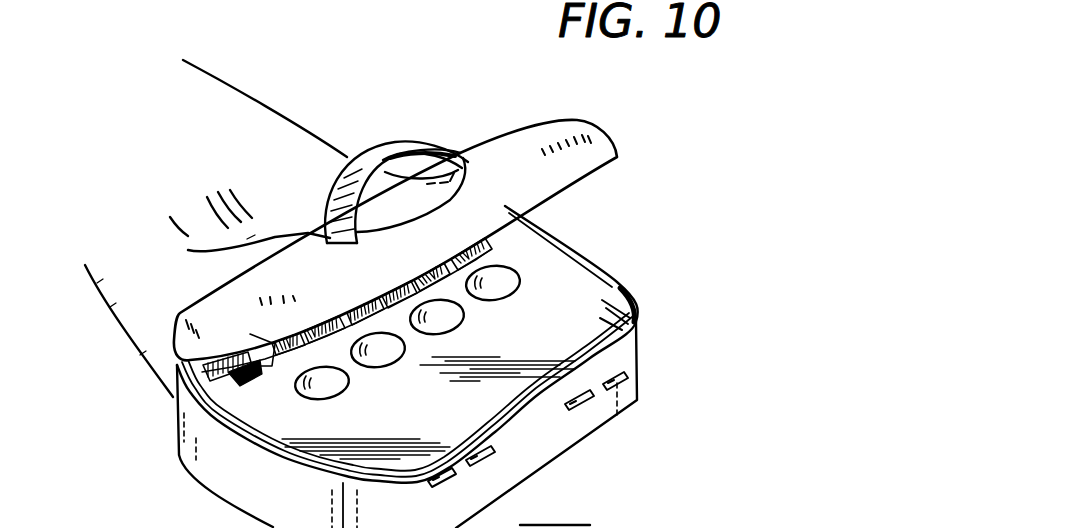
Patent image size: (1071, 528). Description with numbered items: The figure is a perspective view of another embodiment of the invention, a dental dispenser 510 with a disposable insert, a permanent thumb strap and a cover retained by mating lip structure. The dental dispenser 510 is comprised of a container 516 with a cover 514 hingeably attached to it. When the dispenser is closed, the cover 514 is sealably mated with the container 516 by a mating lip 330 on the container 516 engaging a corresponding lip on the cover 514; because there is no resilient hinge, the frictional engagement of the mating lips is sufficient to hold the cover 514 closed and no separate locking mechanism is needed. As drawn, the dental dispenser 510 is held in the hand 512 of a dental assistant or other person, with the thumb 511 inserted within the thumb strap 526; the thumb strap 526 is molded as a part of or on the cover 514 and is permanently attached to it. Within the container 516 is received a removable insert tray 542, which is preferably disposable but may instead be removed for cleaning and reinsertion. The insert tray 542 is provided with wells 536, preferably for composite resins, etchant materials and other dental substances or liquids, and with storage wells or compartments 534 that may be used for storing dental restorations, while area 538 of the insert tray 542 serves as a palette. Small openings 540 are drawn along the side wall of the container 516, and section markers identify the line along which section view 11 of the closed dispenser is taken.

The dental dispenser 510 is at (640, 122).
The thumb 511 is at (462, 158).
The user's finger/hand 512 is at (282, 110).
The cover 514 is at (617, 155).
The container 516 is at (640, 350).
The thumb strap 526 is at (395, 150).
The mating lip 330 is at (643, 311).
The storage wells 534 is at (227, 373).
The wells 536 is at (522, 285).
The palette area 538 is at (612, 295).
The vent slots 540 is at (583, 407).
The disposable insert tray 542 is at (598, 279).
The section line 11- 11 is at (597, 190).